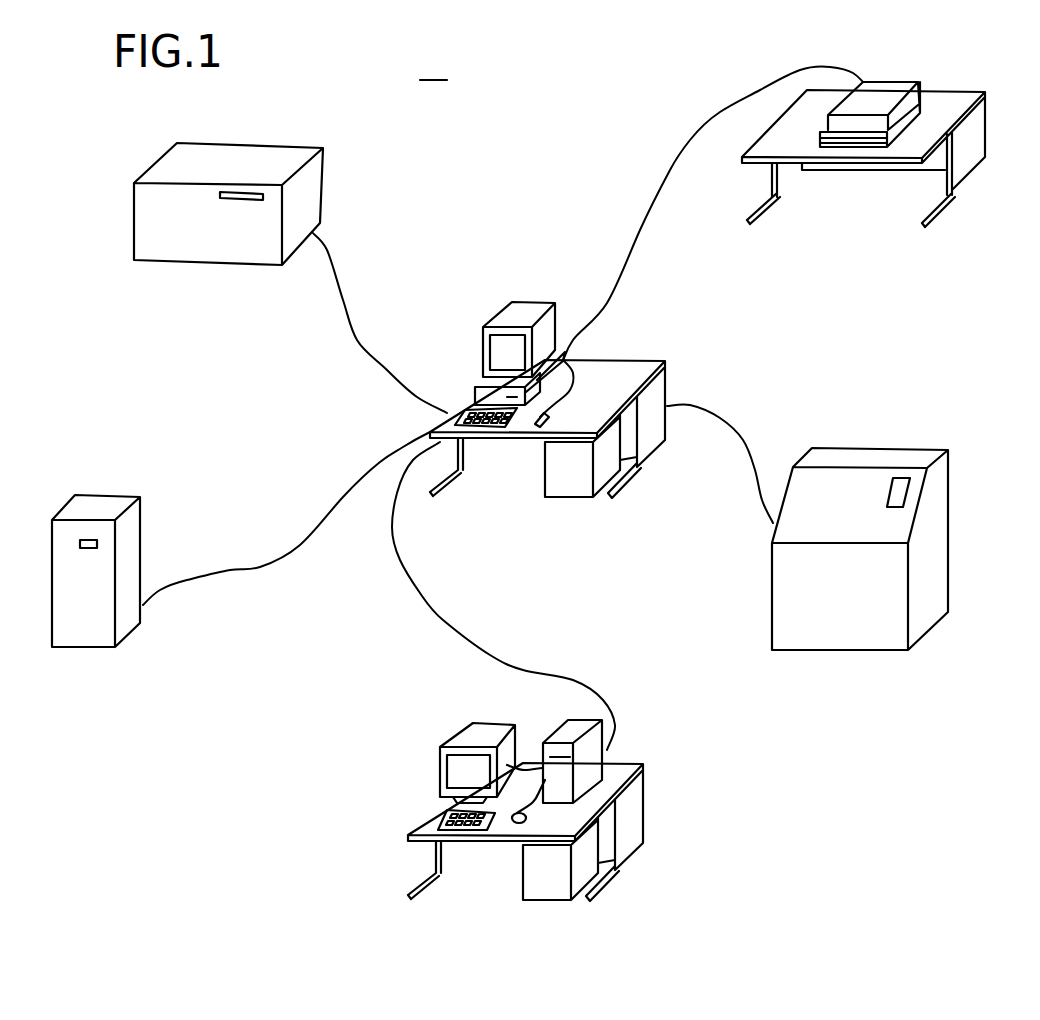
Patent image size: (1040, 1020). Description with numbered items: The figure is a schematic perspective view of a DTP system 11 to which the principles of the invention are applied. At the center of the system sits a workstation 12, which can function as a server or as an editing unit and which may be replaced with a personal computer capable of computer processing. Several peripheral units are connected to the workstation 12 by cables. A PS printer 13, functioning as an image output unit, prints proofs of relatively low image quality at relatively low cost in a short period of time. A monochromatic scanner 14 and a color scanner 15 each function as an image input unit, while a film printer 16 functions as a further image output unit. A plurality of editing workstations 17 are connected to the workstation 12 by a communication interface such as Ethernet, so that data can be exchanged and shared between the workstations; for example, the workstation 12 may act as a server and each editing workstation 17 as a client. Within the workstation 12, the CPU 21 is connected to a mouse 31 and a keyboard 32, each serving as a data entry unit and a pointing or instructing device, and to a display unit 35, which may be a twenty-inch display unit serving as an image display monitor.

The DTP system 11 is at (433, 63).
The workstation 12 is at (532, 400).
The PS printer 13 is at (837, 196).
The monochromatic scanner 14 is at (317, 173).
The color scanner 15 is at (143, 538).
The film printer 16 is at (770, 603).
The editing workstation 17 is at (437, 728).
The CPU 21 is at (575, 375).
The mouse 31 is at (543, 440).
The keyboard 32 is at (466, 396).
The display unit 35 is at (487, 320).